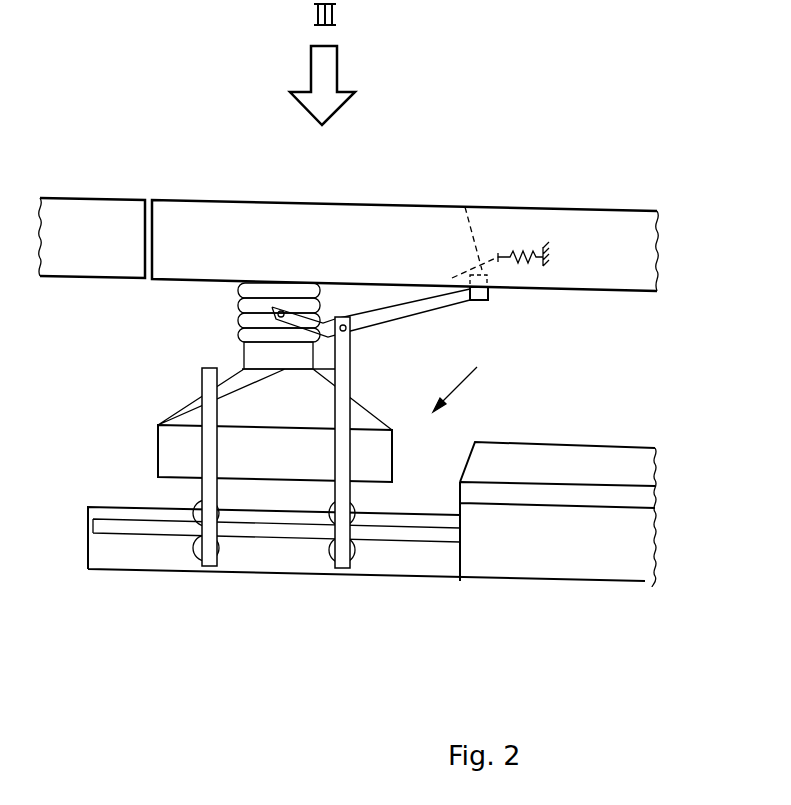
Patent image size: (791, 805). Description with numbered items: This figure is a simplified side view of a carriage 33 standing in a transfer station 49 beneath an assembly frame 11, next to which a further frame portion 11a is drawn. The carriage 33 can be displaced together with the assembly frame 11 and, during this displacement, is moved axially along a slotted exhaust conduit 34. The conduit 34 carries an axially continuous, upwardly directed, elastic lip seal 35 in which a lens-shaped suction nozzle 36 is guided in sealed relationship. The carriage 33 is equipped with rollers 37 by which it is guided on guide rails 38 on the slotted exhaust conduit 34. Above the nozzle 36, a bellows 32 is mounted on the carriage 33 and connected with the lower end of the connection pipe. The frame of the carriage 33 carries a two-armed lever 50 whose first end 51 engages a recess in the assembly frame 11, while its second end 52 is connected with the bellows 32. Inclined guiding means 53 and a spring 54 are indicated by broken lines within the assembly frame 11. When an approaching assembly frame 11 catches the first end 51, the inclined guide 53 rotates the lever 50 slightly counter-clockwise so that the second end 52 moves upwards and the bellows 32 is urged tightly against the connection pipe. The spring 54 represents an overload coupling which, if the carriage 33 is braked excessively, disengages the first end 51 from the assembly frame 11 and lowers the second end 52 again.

The assembly frame 11 is at (600, 237).
The adjacent plate 11a is at (93, 212).
The bellows 32 is at (238, 306).
The carriage 33 is at (468, 381).
The slotted exhaust conduit 34 is at (570, 548).
The elastic lip seal 35 is at (586, 462).
The lens-shaped suction nozzle 36 is at (165, 458).
The rollers 37 is at (332, 568).
The guide rails 38 is at (418, 535).
The transfer station 49 is at (450, 642).
The two-armed lever 50 is at (380, 323).
The first end of the lever 51 is at (478, 300).
The second end of the lever 52 is at (293, 313).
The inclined guiding means 53 is at (465, 207).
The spring 54 is at (522, 258).